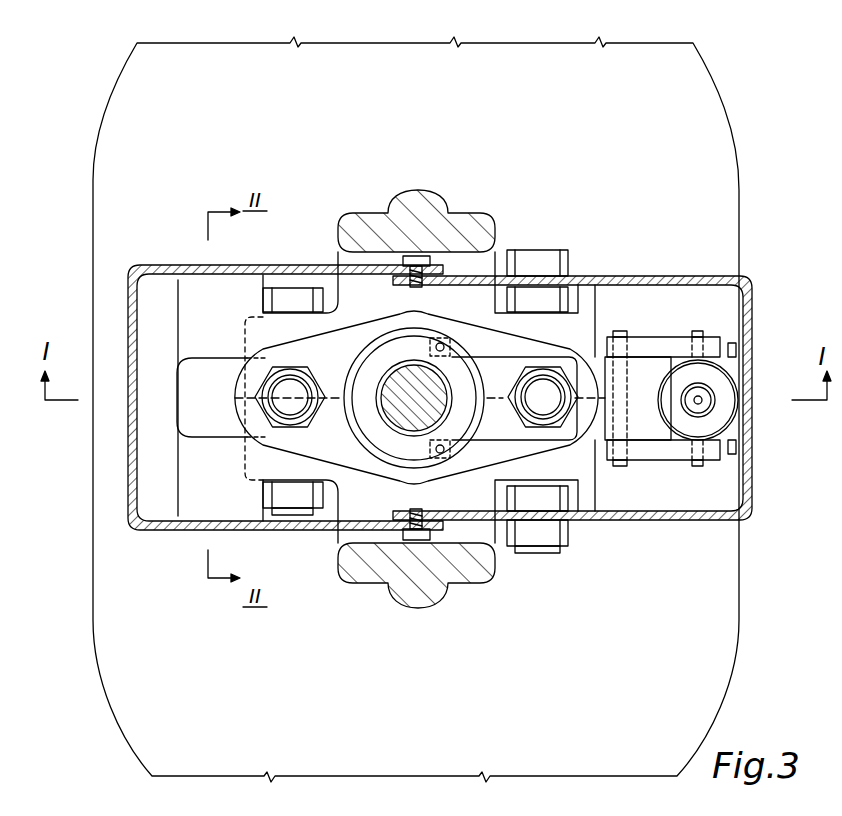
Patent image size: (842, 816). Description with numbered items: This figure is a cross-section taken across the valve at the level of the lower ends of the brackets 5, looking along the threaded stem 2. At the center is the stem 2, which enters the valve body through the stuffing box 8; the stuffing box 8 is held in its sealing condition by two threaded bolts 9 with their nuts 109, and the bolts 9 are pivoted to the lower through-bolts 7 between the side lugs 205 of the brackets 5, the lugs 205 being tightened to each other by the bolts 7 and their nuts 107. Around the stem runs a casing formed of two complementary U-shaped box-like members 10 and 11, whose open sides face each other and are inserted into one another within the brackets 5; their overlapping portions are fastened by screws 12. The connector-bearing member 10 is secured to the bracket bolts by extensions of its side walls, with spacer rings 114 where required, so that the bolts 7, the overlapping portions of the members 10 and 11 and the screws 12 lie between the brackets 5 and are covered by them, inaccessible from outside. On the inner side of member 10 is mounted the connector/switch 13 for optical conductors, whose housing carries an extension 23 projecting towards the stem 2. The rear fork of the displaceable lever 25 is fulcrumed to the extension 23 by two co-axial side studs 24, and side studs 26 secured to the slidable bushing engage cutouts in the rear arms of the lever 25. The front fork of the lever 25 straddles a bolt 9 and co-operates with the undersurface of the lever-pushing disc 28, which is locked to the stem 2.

The threaded stem 2 is at (397, 382).
The bracket 5 is at (419, 199).
The threaded through-bolt 7 is at (290, 514).
The stuffing box 8 is at (357, 460).
The threaded bolt 9 is at (287, 398).
The connector-bearing box-like member 10 is at (747, 320).
The box-like member 11 is at (133, 465).
The screw 12 is at (416, 262).
The connector/switch 13 is at (736, 430).
The extension 23 is at (648, 446).
The side stud 24 is at (623, 332).
The displaceable lever 25 is at (604, 460).
The side stud 26 is at (693, 335).
The lever-pushing disc 28 is at (415, 347).
The nut 107 is at (295, 293).
The nut 109 is at (266, 375).
The spacer ring 114 is at (568, 300).
The side lug 205 is at (248, 318).